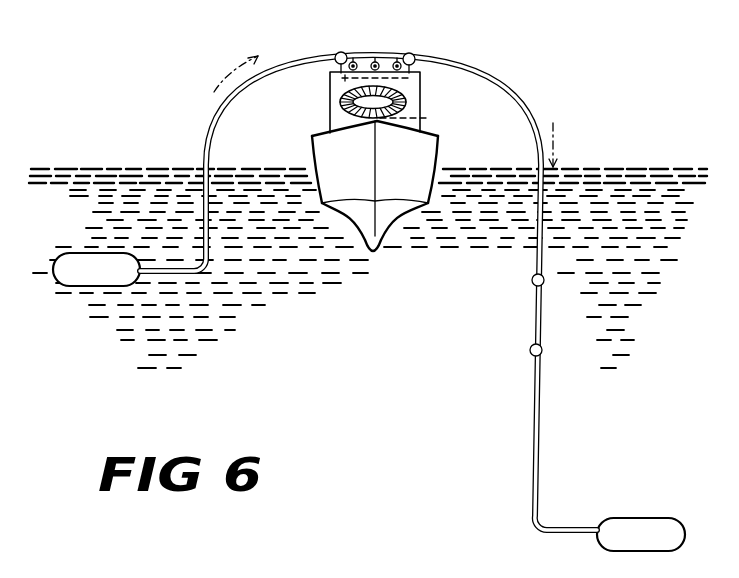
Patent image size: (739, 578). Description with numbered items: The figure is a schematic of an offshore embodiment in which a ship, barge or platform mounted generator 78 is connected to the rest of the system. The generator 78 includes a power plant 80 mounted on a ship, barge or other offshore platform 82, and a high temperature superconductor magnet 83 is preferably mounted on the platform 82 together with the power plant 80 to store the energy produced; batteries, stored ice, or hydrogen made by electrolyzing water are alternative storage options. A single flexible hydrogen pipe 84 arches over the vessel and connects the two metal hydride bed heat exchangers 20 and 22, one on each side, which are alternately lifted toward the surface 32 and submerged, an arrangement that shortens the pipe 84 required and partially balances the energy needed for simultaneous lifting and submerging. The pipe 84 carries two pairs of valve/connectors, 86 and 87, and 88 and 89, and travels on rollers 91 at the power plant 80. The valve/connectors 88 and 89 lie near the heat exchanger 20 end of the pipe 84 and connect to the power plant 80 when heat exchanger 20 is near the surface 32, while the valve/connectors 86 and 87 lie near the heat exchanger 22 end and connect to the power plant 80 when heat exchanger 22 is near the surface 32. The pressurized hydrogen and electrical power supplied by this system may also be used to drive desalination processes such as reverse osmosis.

The metal hydride bed heat exchanger 20 is at (76, 258).
The metal hydride bed heat exchanger 22 is at (633, 527).
The surface 32 is at (634, 178).
The ship, barge or platform mounted generator 78 is at (384, 265).
The power plant 80 is at (330, 93).
The ship, barge or other offshore platform 82 is at (317, 149).
The high temperature superconductor magnet 83 is at (426, 117).
The flexible pipe 84 is at (196, 276).
The valve/connector 86 is at (541, 355).
The valve/connector 87 is at (532, 283).
The valve/connector 88 is at (414, 55).
The valve/connector 89 is at (340, 52).
The rollers 91 is at (398, 62).